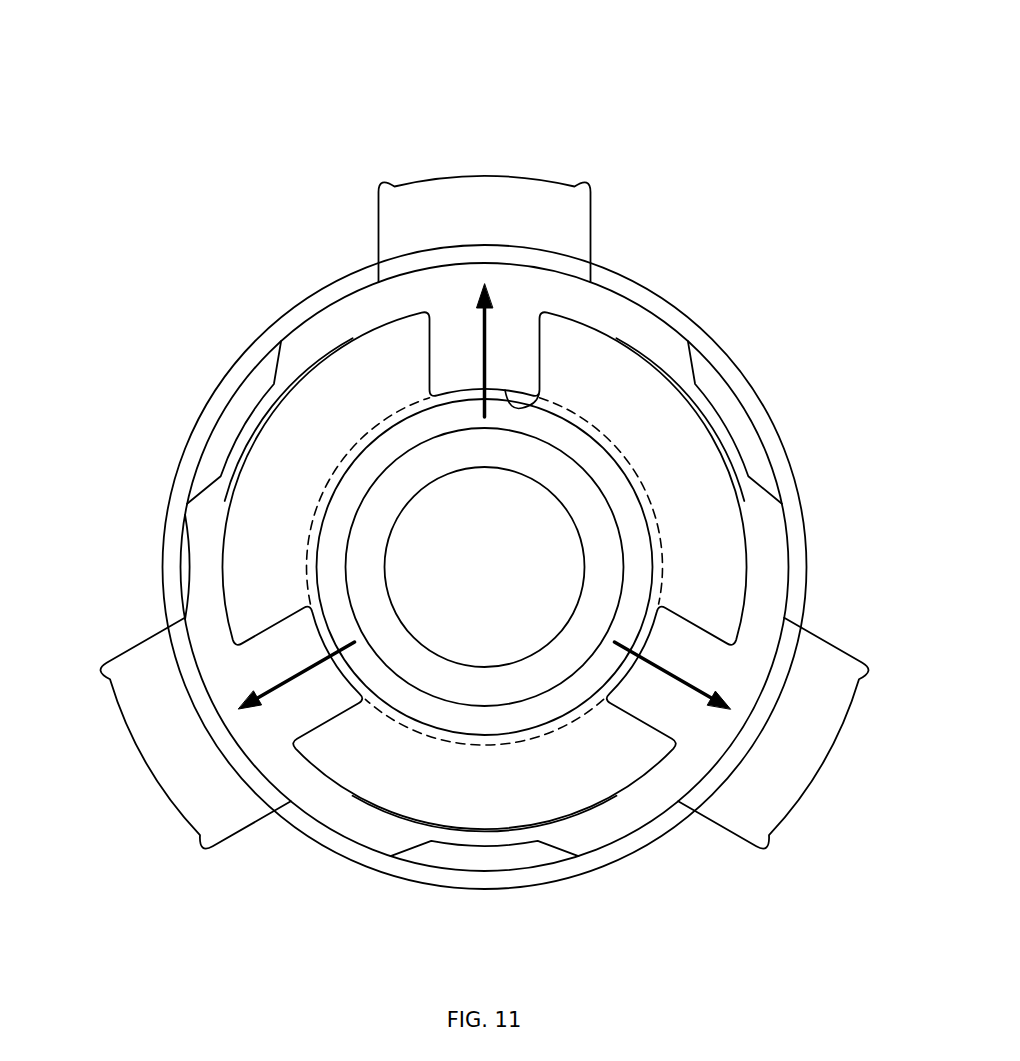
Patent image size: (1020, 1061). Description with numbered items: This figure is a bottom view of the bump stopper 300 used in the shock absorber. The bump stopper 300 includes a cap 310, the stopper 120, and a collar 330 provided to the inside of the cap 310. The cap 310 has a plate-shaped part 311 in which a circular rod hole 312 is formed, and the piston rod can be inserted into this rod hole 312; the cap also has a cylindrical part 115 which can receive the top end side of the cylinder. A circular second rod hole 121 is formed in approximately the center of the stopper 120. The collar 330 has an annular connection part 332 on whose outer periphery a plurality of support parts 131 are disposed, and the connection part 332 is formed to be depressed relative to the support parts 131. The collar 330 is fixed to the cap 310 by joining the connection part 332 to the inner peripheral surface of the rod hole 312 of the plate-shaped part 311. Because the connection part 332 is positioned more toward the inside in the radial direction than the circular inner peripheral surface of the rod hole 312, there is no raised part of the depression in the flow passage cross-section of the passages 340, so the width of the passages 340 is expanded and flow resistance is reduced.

The bump stopper 300 is at (208, 116).
The cap 310 is at (163, 568).
The plate-shaped part 311 is at (208, 588).
The rod hole 312 is at (541, 400).
The cylindrical part 115 is at (180, 500).
The passages 340 is at (457, 343).
The collar 330 is at (225, 517).
The connection part 332 is at (413, 427).
The support parts 131 is at (317, 387).
The stopper 120 is at (543, 470).
The second rod hole 121 is at (572, 536).